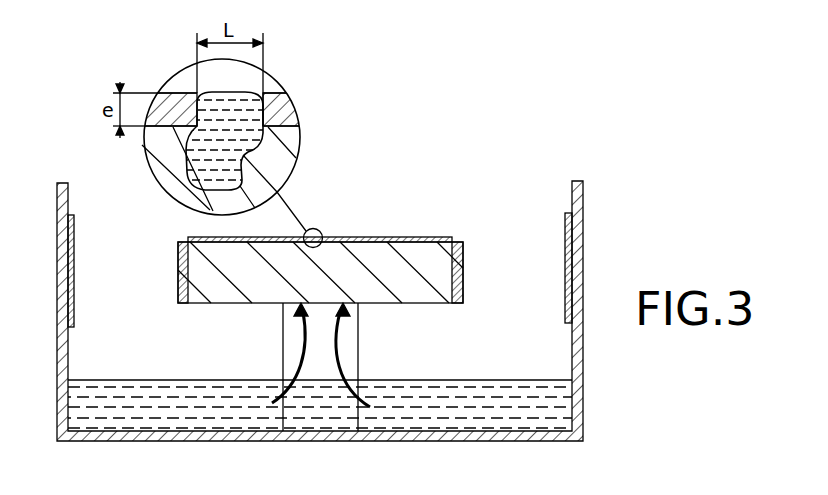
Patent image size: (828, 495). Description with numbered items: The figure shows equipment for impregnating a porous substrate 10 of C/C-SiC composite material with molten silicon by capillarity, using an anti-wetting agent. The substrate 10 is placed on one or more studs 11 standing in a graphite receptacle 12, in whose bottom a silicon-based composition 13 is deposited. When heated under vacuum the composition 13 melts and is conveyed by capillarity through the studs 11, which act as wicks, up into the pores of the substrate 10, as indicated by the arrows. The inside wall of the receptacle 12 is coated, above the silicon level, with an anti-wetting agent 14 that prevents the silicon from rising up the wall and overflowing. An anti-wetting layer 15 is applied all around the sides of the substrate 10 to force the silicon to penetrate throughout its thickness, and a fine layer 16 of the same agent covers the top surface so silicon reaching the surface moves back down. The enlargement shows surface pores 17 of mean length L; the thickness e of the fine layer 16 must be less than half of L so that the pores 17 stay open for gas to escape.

The porous substrate 10 is at (405, 250).
The studs 11 is at (290, 338).
The graphite receptacle 12 is at (573, 270).
The silicon-based composition 13 is at (483, 398).
The anti-wetting agent 14 is at (73, 253).
The anti-wetting layer 15 is at (457, 283).
The fine layer of anti-wetting agent 16 is at (176, 72).
The pores 17 is at (173, 170).